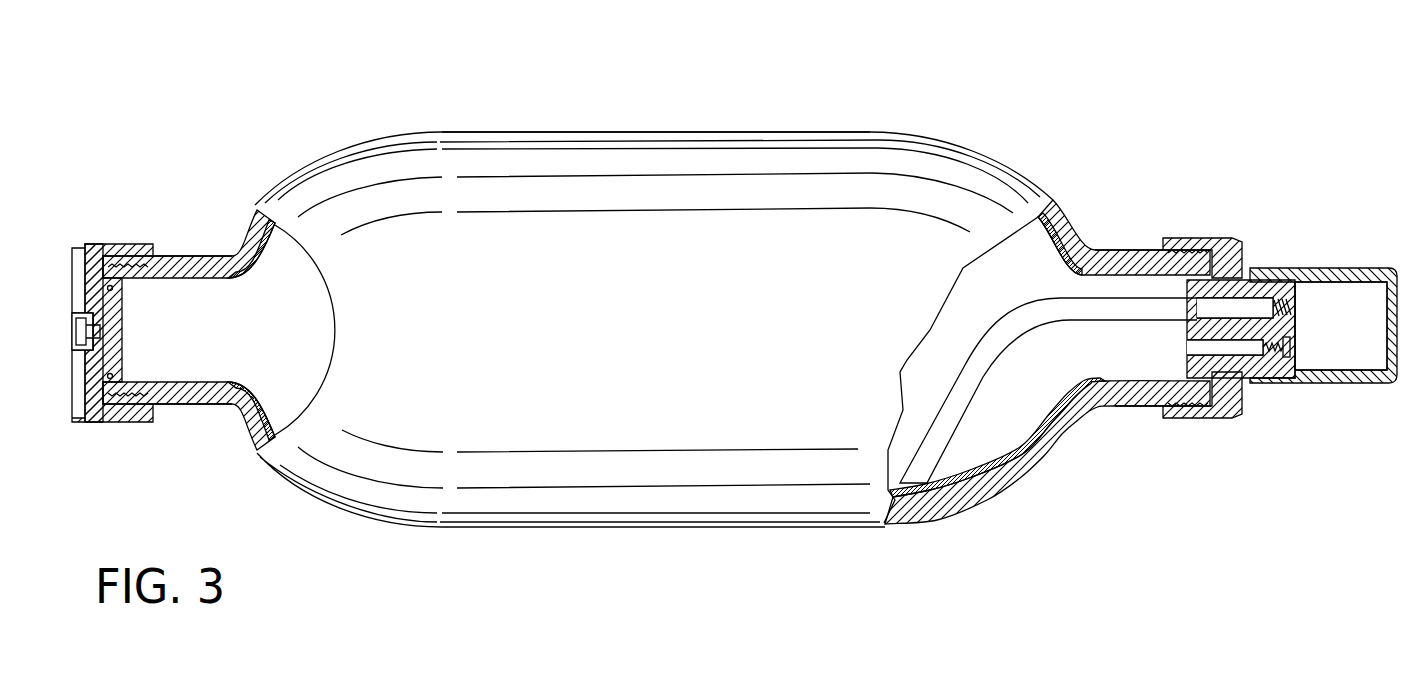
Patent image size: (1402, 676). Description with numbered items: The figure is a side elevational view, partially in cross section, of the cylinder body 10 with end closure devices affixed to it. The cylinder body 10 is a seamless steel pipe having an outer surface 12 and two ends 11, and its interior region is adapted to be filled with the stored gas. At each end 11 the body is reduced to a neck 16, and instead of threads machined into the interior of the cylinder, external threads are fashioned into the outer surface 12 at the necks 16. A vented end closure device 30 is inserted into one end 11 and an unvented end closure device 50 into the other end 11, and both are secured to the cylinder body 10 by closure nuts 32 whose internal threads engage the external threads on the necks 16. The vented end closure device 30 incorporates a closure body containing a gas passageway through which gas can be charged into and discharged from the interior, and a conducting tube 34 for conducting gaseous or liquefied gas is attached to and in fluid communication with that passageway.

The cylinder body 10 is at (483, 104).
The ends 11 is at (174, 238).
The outer surface 12 is at (793, 148).
The necks 16 is at (193, 407).
The vented end closure device 30 is at (1282, 255).
The closure nuts 32 is at (133, 243).
The conducting tube 34 is at (983, 376).
The unvented end closure device 50 is at (90, 449).